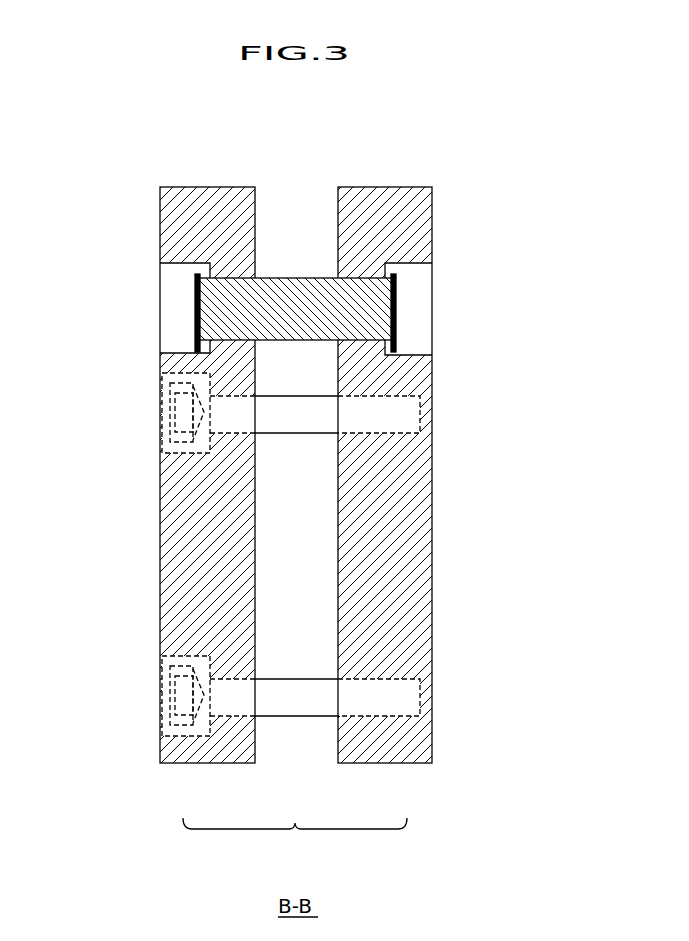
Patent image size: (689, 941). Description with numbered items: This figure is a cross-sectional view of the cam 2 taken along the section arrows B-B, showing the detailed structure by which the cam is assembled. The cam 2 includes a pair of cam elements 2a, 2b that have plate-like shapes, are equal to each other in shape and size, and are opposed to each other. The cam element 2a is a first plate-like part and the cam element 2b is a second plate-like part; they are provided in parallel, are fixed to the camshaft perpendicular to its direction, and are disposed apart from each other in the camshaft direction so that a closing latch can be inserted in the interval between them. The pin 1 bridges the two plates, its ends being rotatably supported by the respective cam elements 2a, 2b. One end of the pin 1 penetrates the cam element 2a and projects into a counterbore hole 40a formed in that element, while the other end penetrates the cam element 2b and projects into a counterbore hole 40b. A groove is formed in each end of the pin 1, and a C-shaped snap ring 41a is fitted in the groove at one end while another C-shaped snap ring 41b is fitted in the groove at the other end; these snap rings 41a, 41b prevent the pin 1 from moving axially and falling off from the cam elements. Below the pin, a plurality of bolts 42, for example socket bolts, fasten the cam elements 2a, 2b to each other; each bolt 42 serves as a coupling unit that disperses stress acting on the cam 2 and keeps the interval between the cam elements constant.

The pin 1 is at (293, 278).
The cam 2 is at (295, 840).
The cam element 2a is at (205, 763).
The cam element 2b is at (378, 763).
The counterbore hole 40a is at (160, 278).
The counterbore hole 40b is at (432, 278).
The C-shaped snap ring 41a is at (195, 328).
The C-shaped snap ring 41b is at (397, 318).
The bolt 42 is at (183, 443).